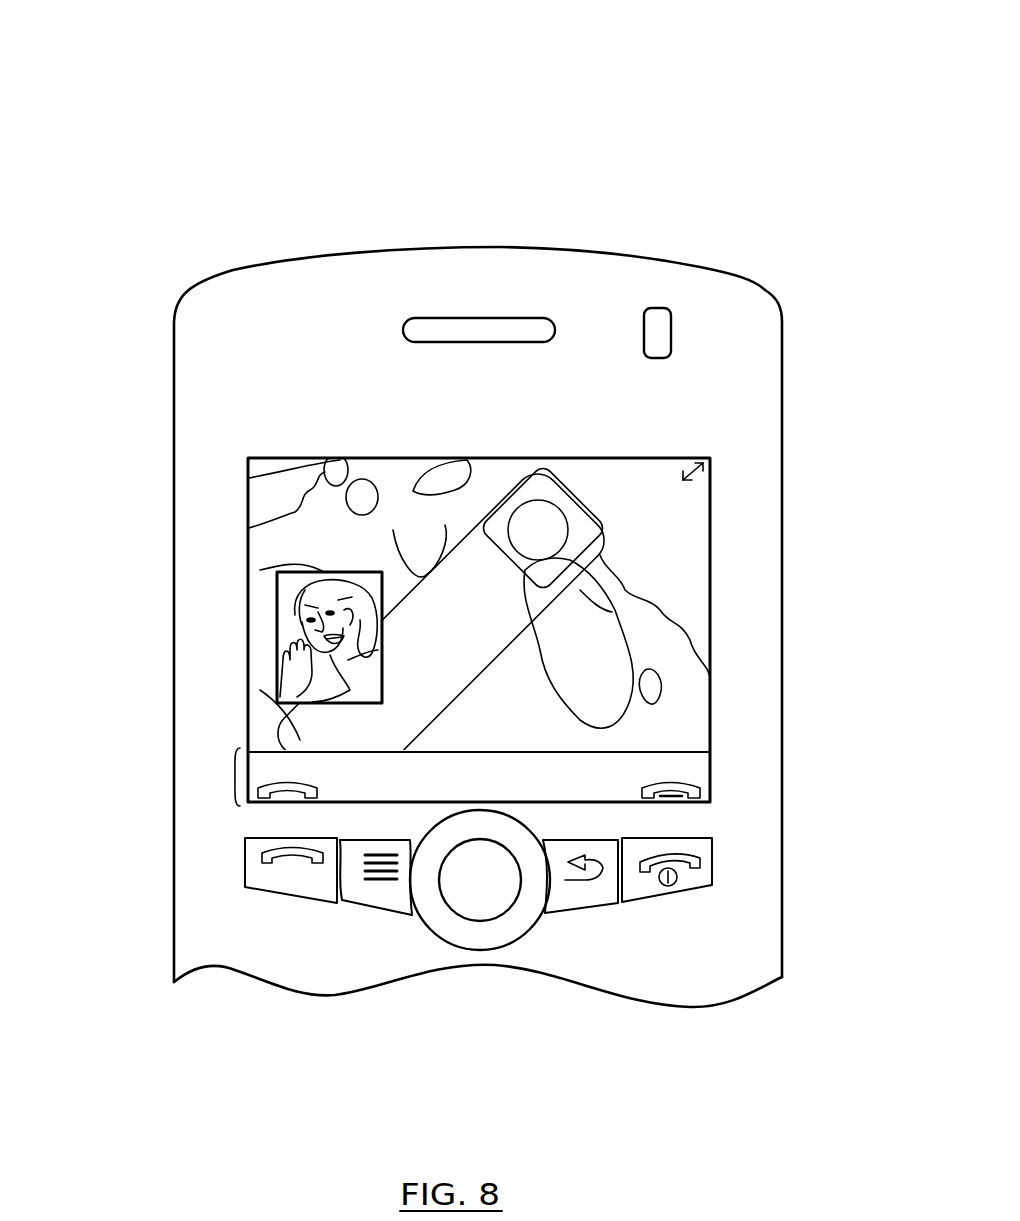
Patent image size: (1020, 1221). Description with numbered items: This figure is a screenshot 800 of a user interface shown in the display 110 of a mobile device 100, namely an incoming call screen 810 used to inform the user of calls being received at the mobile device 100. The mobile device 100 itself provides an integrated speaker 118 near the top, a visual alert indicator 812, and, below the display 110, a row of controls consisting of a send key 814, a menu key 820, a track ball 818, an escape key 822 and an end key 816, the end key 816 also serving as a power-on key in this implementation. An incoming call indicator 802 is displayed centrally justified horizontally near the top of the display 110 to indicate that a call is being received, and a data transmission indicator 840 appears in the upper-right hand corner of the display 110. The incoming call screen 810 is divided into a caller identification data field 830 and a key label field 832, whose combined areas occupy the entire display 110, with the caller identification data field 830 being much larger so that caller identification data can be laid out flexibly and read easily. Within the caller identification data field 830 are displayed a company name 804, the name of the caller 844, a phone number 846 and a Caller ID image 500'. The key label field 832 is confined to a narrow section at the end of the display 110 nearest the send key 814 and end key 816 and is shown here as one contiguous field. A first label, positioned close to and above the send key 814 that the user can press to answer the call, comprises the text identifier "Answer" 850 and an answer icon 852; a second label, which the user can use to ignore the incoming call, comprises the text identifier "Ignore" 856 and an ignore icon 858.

The screenshot 800 is at (666, 90).
The mobile device 100 is at (405, 240).
The integrated speaker 118 is at (403, 330).
The visual alert indicator 812 is at (660, 325).
The incoming call screen 810 is at (515, 448).
The data transmission indicator 840 is at (710, 458).
The caller identification data field 830 is at (686, 518).
The display 110 is at (718, 568).
The incoming call indicator 802 is at (395, 488).
The name of the caller 844 is at (420, 593).
The phone number 846 is at (640, 630).
The company name 804 is at (640, 670).
The Caller ID image 500' is at (228, 637).
The text identifier "Answer" 850 is at (283, 757).
The answer icon 852 is at (275, 803).
The text identifier "Ignore" 856 is at (680, 750).
The ignore icon 858 is at (685, 800).
The key label field 832 is at (224, 776).
The send key 814 is at (255, 870).
The menu key 820 is at (375, 900).
The track ball 818 is at (480, 925).
The escape key 822 is at (573, 897).
The end key 816 is at (700, 870).